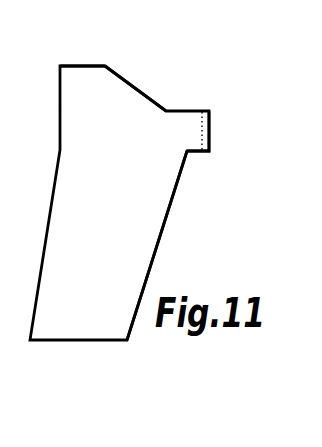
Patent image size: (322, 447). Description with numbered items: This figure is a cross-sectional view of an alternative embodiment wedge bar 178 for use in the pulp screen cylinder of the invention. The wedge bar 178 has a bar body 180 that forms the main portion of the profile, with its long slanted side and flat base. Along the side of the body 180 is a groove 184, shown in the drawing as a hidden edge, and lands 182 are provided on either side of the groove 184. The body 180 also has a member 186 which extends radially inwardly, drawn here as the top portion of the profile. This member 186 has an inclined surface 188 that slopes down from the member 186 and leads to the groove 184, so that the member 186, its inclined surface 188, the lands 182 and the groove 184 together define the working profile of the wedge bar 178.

The wedge bar 178 is at (207, 197).
The bar body 180 is at (162, 227).
The lands 182 is at (210, 134).
The groove 184 is at (210, 125).
The member 186 is at (80, 65).
The inclined surface 188 is at (152, 97).